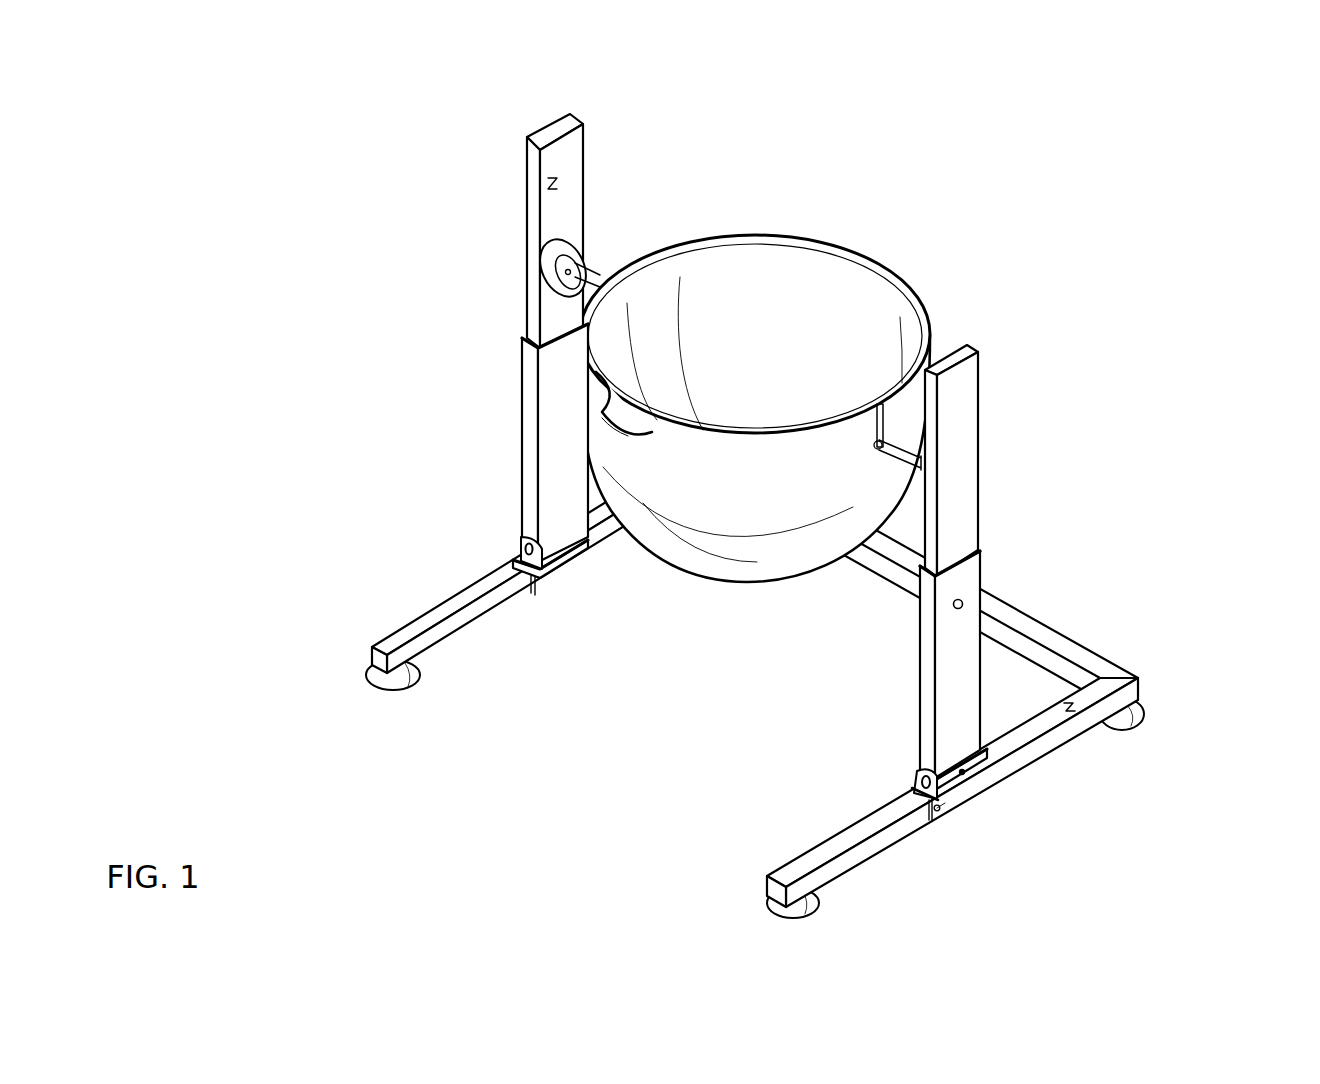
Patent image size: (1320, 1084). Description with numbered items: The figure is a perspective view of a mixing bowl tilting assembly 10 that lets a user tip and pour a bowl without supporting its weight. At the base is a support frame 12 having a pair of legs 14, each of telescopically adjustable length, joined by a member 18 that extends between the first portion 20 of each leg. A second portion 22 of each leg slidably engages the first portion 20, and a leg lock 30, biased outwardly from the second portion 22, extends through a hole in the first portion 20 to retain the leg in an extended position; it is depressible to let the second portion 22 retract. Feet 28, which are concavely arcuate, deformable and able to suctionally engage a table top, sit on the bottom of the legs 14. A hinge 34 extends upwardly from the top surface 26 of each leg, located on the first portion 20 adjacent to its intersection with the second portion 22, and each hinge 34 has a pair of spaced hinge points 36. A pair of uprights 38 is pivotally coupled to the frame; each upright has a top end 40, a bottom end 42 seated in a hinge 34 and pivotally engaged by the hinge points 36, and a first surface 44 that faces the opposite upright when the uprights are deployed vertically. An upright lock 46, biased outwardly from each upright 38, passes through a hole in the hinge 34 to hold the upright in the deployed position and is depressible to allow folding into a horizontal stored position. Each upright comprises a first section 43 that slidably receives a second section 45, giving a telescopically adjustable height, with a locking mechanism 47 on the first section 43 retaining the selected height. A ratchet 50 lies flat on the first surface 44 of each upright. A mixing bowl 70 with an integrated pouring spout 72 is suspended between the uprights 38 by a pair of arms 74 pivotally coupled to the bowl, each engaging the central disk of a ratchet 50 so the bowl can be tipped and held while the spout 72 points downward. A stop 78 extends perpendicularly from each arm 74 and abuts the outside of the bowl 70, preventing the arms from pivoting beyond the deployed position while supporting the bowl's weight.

The mixing bowl tilting assembly 10 is at (808, 501).
The support frame 12 is at (808, 702).
The legs 14 is at (438, 600).
The member 18 is at (1030, 614).
The first portion 20 is at (596, 560).
The second portion 22 is at (493, 614).
The top surface 26 is at (1068, 703).
The feet 28 is at (405, 690).
The leg locks 30 is at (940, 812).
The hinges 34 is at (794, 679).
The hinge points 36 is at (652, 512).
The uprights 38 is at (765, 306).
The top end 40 is at (572, 118).
The bottom end 42 is at (544, 568).
The first section 43 is at (728, 551).
The first surface 44 is at (560, 183).
The second section 45 is at (527, 187).
The upright locks 46 is at (962, 768).
The locking mechanism 47 is at (958, 598).
The ratchets 50 is at (597, 244).
The mixing bowl 70 is at (688, 387).
The pouring spout 72 is at (598, 404).
The arms 74 is at (884, 556).
The stops 78 is at (886, 412).